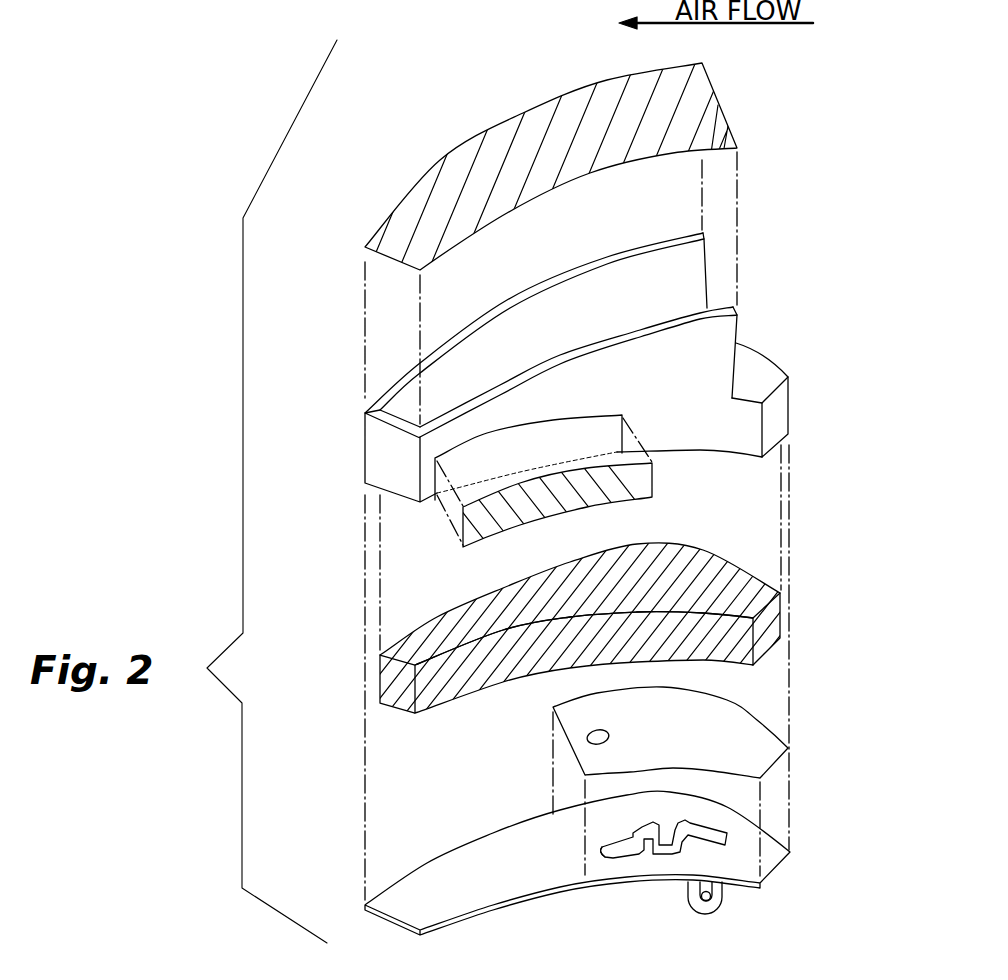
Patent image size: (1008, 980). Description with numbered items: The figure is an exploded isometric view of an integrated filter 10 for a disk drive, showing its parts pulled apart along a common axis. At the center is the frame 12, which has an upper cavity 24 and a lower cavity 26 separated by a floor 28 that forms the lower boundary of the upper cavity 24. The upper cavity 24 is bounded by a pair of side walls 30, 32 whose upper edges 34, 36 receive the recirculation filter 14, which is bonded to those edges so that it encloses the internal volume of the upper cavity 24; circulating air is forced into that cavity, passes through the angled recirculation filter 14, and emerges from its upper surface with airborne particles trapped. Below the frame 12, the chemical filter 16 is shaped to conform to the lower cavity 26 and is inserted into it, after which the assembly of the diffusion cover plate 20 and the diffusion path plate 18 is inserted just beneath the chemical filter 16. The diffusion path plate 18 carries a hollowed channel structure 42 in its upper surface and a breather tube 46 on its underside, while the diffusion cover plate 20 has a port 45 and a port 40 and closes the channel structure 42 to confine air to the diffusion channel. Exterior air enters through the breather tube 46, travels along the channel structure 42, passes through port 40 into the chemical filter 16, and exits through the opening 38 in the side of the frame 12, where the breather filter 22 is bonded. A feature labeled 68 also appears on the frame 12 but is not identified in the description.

The integrated filter 10 is at (355, 150).
The frame 12 is at (378, 450).
The recirculation filter 14 is at (497, 145).
The chemical filter 16 is at (385, 683).
The diffusion path plate 18 is at (552, 869).
The diffusion cover plate 20 is at (706, 732).
The breather filter 22 is at (638, 485).
The upper cavity 24 is at (515, 327).
The lower cavity 26 is at (733, 458).
The floor 28 is at (768, 373).
The side wall 30 is at (595, 278).
The side wall 32 is at (720, 330).
The upper edge 34 is at (697, 317).
The upper edge 36 is at (675, 238).
The opening 38 is at (598, 427).
The port 40 is at (608, 735).
The hollowed channel structure 42 is at (653, 855).
The port 45 is at (603, 855).
The breather tube 46 is at (717, 910).
The top face of end block 68 is at (773, 393).